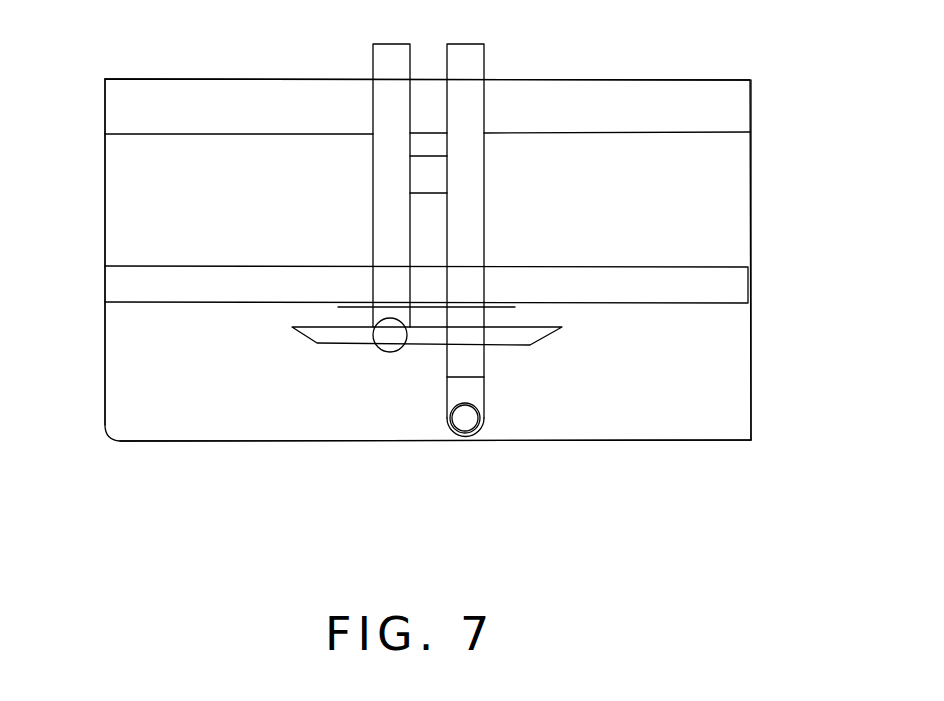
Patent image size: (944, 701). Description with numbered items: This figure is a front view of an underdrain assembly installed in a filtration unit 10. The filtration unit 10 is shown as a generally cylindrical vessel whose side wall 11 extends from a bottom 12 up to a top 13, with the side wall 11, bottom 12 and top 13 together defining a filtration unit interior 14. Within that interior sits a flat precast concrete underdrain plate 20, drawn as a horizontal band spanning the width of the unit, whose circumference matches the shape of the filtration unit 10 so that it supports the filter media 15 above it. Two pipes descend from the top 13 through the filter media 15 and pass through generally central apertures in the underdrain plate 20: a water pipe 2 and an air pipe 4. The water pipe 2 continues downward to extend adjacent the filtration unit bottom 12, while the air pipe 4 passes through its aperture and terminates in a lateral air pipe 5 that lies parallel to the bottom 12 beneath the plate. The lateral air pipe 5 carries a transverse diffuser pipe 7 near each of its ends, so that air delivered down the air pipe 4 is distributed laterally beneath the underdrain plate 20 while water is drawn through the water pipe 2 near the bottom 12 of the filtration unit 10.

The filtration unit 10 is at (752, 105).
The top 13 is at (593, 75).
The filtration unit interior 14 is at (150, 115).
The side wall 11 is at (102, 228).
The filter media 15 is at (238, 221).
The air pipe 4 is at (388, 218).
The water pipe 2 is at (477, 213).
The underdrain plate 20 is at (730, 288).
The lateral air pipe 5 is at (392, 340).
The transverse diffuser pipe 7 is at (532, 338).
The bottom 12 is at (622, 442).